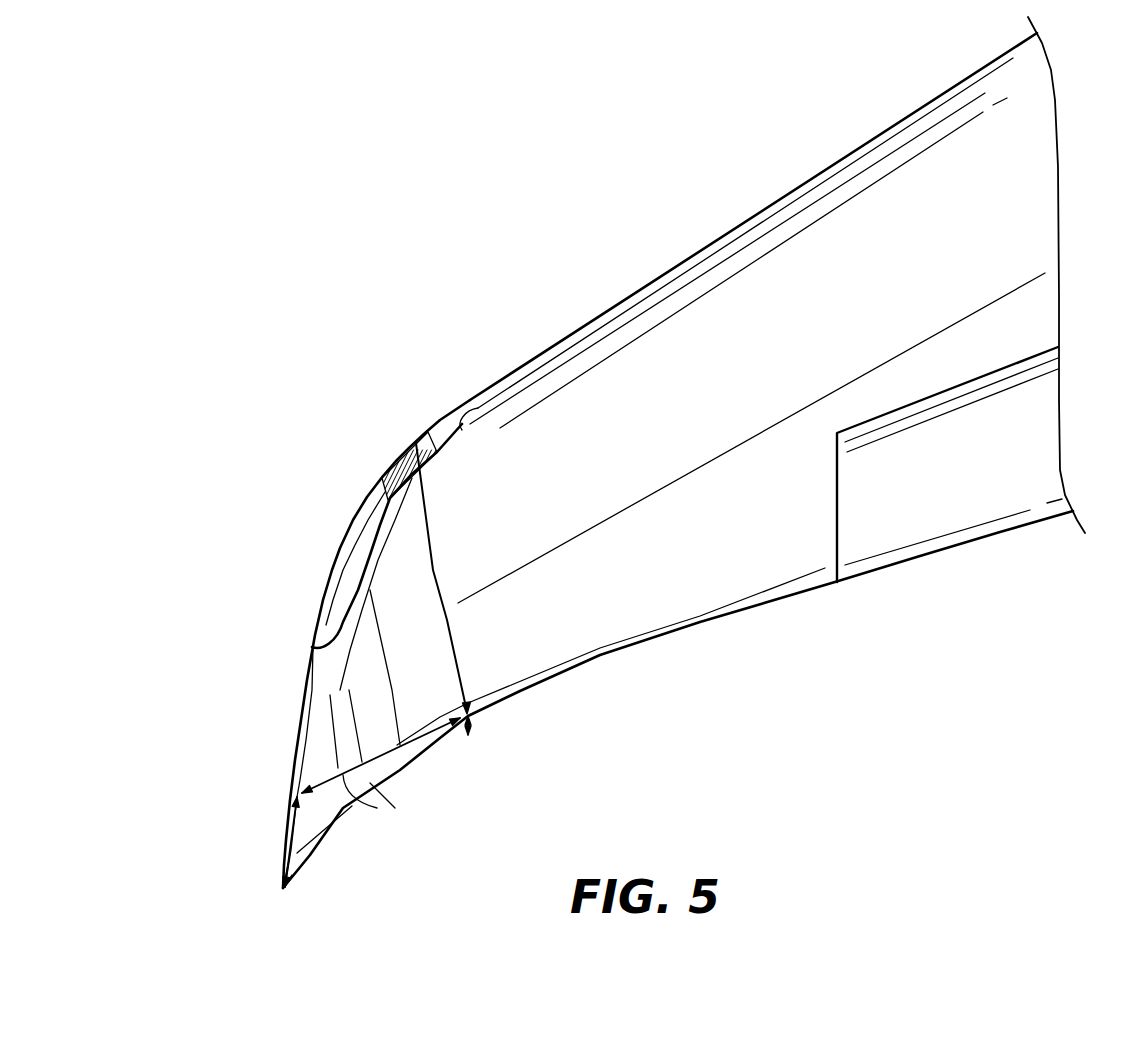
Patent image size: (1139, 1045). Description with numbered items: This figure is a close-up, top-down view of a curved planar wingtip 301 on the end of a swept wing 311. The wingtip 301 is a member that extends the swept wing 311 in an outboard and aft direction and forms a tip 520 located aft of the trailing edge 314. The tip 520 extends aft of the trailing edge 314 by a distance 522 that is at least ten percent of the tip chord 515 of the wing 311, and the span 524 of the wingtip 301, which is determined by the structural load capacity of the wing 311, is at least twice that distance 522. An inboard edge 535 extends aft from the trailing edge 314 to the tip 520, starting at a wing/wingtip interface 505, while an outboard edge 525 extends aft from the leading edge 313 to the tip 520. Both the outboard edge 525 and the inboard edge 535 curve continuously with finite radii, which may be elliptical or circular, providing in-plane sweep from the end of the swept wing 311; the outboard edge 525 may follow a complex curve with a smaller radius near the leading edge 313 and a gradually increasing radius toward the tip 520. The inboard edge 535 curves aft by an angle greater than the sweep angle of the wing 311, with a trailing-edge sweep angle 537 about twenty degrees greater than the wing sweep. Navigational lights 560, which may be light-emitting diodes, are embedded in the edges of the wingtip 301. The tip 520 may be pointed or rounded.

The curved planar wingtip 301 is at (361, 468).
The swept wing 311 is at (1020, 211).
The leading edge 313 is at (877, 138).
The trailing edge 314 is at (797, 590).
The wing/wingtip interface 505 is at (470, 730).
The tip chord 515 is at (440, 562).
The tip 520 is at (272, 904).
The distance 522 is at (291, 852).
The span 524 is at (407, 748).
The outboard edge 525 is at (304, 690).
The inboard edge 535 is at (362, 787).
The trailing-edge sweep angle 537 is at (370, 800).
The navigational lights 560 is at (414, 445).